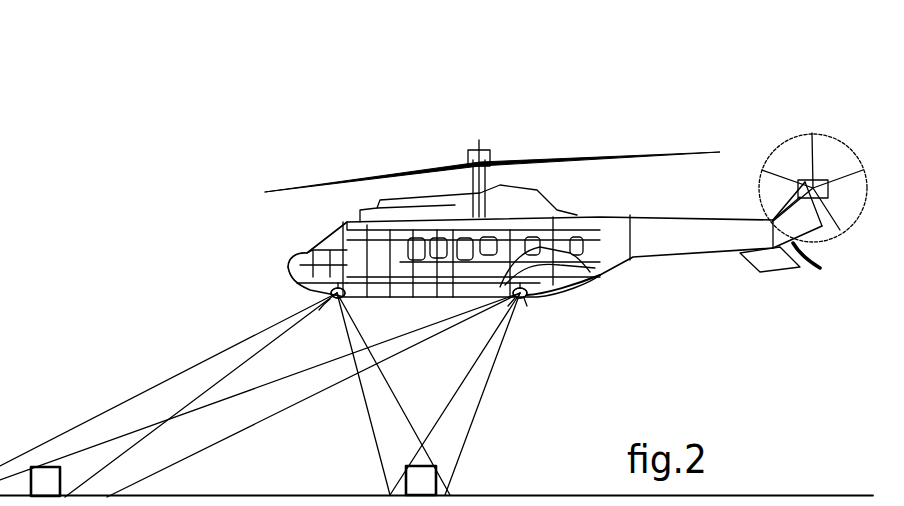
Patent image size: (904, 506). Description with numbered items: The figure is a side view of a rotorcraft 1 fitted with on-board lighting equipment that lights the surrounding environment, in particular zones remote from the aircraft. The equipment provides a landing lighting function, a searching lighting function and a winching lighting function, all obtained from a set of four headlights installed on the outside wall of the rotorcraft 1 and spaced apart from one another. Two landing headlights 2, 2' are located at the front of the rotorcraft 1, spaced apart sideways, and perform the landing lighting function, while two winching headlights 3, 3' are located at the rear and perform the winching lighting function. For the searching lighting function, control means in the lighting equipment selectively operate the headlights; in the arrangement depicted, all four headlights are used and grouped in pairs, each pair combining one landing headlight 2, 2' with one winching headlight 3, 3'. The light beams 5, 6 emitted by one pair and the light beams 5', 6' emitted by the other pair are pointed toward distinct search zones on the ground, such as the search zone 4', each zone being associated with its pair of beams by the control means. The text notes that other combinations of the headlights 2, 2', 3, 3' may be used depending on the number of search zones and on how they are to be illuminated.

The rotorcraft 1 is at (571, 128).
The landing headlight 2 is at (277, 298).
The landing headlight 2' is at (338, 293).
The winching headlight 3 is at (558, 317).
The winching headlight 3' is at (520, 293).
The search zone 4' is at (476, 462).
The light beam 5 is at (168, 379).
The light beam 5' is at (393, 394).
The light beam 6 is at (313, 395).
The light beam 6' is at (495, 394).